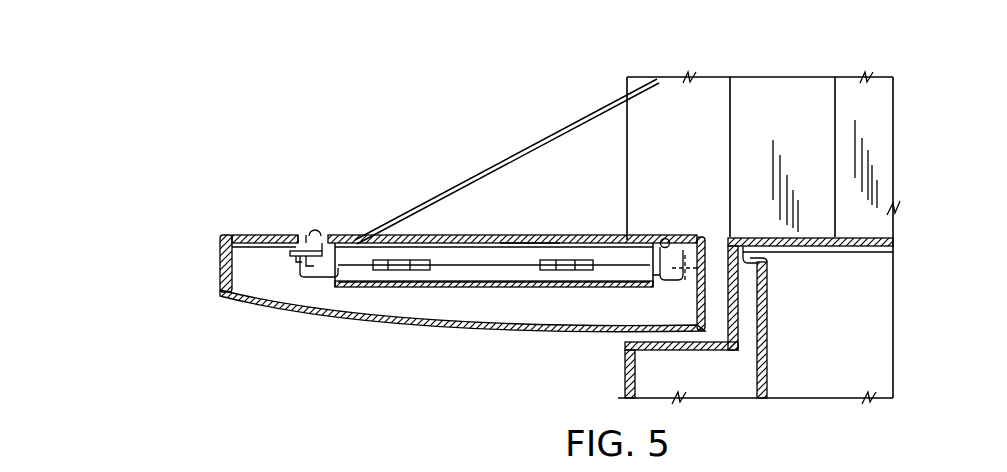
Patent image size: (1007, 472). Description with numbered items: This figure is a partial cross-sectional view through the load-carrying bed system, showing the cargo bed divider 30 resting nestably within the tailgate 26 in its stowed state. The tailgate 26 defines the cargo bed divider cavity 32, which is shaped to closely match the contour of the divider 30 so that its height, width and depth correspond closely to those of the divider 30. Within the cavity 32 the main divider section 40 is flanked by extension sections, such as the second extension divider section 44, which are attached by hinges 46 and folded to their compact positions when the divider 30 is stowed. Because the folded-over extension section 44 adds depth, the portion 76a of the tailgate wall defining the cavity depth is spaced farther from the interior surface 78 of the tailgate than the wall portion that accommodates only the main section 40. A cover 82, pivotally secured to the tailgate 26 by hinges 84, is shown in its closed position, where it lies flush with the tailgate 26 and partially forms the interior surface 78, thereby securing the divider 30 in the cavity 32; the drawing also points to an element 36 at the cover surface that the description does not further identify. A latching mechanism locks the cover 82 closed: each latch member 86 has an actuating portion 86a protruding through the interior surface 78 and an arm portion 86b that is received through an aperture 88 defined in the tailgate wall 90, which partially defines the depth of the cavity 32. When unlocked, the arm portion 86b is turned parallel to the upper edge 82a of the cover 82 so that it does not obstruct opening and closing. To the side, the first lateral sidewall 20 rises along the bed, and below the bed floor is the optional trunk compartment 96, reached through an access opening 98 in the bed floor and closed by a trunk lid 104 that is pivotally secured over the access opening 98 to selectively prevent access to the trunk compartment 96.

The first lateral sidewall 20 is at (877, 137).
The tailgate 26 is at (291, 315).
The cargo bed divider 30 is at (530, 235).
The cargo bed divider cavity 32 is at (506, 284).
The upper surface 36 is at (514, 177).
The main divider section 40 is at (438, 253).
The second extension divider section 44 is at (453, 281).
The hinges 46 is at (407, 271).
The portion of tailgate wall 76a is at (586, 287).
The interior surface 78 is at (286, 240).
The cover 82 is at (582, 238).
The upper edge 82a is at (307, 240).
The hinges 84 is at (668, 238).
The latch member 86 is at (310, 252).
The actuating portion 86a is at (318, 240).
The arm portion 86b is at (300, 248).
The aperture 88 is at (306, 240).
The tailgate wall 90 is at (308, 260).
The trunk compartment 96 is at (866, 318).
The access opening 98 is at (778, 237).
The trunk lid 104 is at (860, 238).